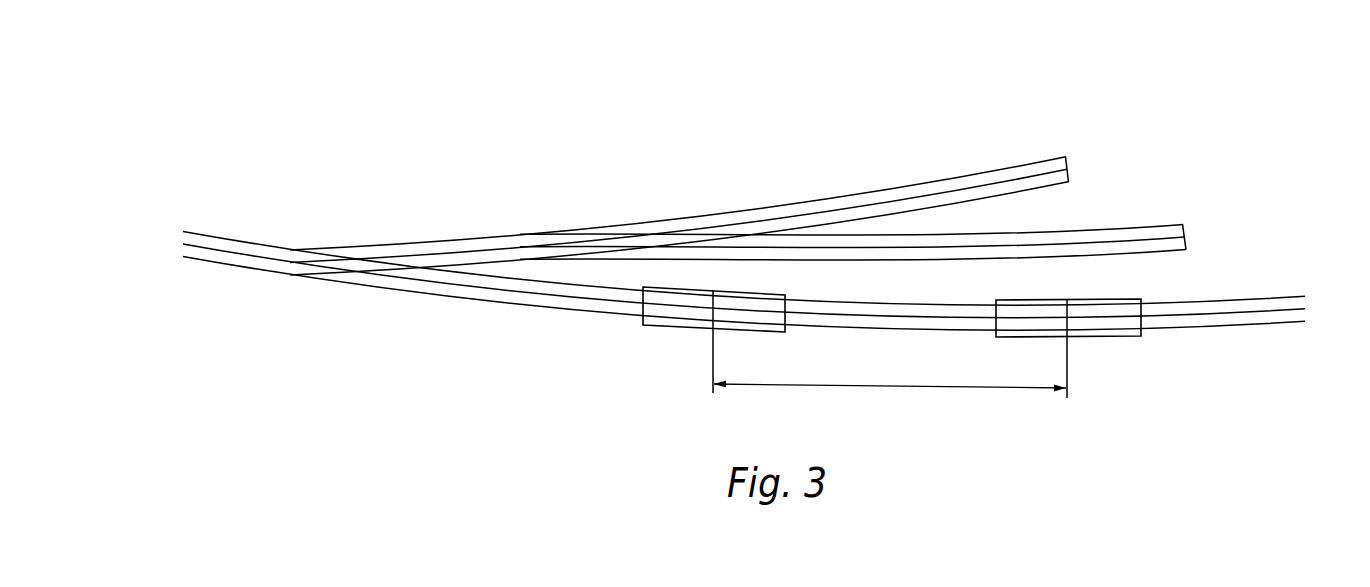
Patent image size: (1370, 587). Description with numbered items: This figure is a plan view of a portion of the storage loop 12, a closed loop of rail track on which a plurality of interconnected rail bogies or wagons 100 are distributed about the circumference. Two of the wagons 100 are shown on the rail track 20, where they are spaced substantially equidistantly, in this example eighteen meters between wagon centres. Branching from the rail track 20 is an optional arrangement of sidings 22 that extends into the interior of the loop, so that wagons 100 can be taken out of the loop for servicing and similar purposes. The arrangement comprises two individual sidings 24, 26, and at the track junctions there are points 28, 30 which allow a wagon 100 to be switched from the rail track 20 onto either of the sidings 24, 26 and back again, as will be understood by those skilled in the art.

The storage loop 12 is at (744, 335).
The rail track 20 is at (458, 295).
The sidings 22 is at (738, 152).
The first individual siding 24 is at (679, 152).
The second individual siding 26 is at (853, 144).
The points 28 is at (337, 262).
The points 30 is at (645, 235).
The rail bogies 100 is at (678, 328).